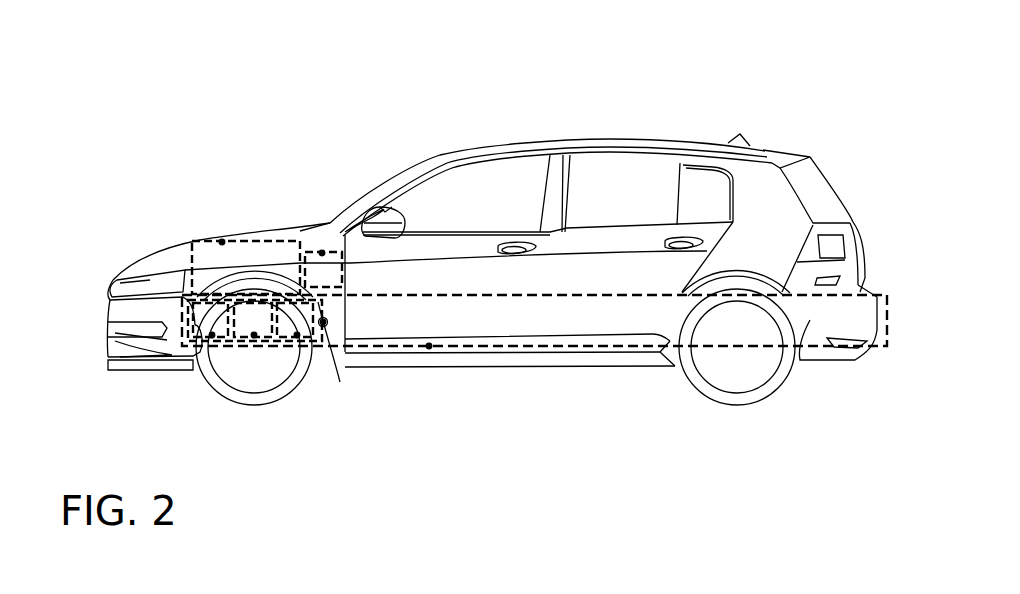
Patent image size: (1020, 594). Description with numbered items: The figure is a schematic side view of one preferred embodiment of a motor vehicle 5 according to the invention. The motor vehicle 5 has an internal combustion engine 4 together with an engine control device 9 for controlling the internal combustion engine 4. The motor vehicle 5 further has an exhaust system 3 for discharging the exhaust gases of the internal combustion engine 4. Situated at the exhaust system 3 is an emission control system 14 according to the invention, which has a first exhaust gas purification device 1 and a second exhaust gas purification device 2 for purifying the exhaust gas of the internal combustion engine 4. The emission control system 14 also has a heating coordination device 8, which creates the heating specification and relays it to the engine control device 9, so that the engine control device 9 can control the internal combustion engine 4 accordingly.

The first exhaust gas purification device 1 is at (212, 335).
The second exhaust gas purification device 2 is at (254, 335).
The exhaust system 3 is at (430, 346).
The internal combustion engine 4 is at (222, 242).
The motor vehicle 5 is at (606, 116).
The heating coordination device 8 is at (297, 335).
The engine control device 9 is at (322, 253).
The emission control system 14 is at (323, 322).